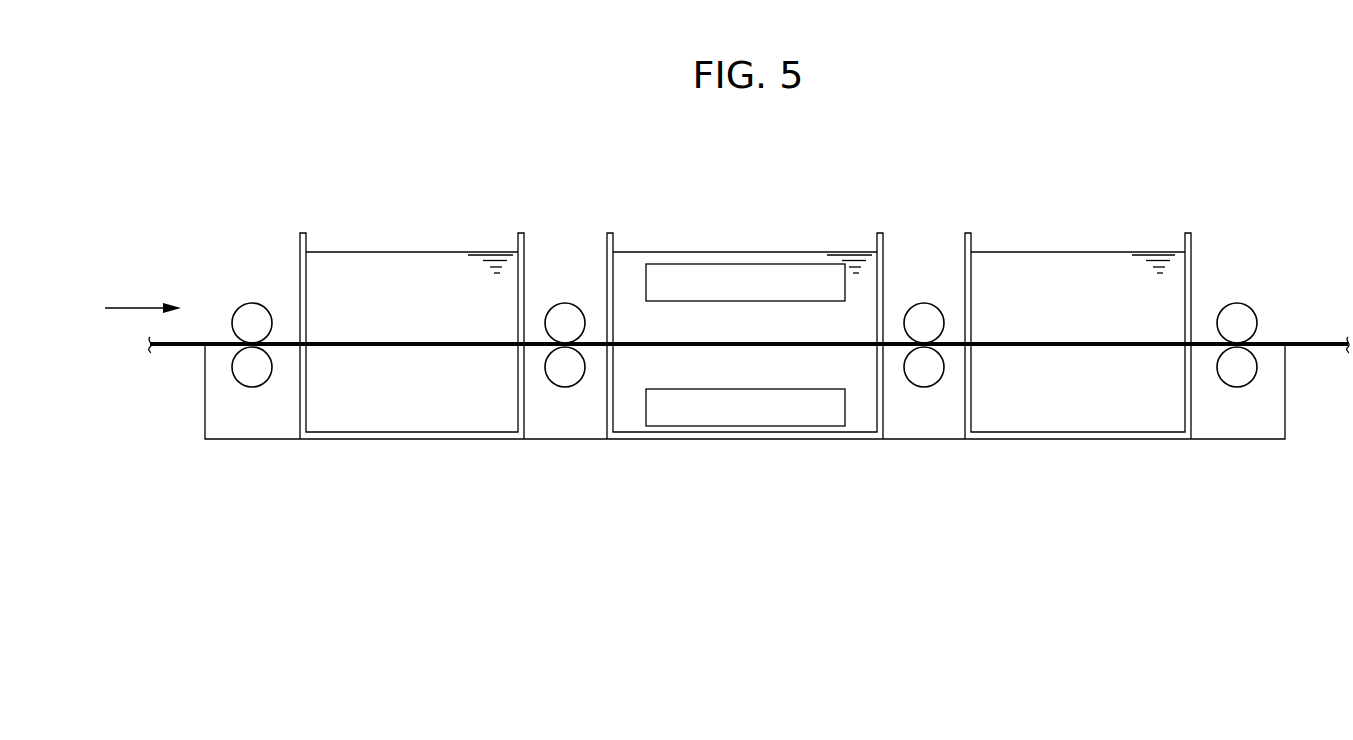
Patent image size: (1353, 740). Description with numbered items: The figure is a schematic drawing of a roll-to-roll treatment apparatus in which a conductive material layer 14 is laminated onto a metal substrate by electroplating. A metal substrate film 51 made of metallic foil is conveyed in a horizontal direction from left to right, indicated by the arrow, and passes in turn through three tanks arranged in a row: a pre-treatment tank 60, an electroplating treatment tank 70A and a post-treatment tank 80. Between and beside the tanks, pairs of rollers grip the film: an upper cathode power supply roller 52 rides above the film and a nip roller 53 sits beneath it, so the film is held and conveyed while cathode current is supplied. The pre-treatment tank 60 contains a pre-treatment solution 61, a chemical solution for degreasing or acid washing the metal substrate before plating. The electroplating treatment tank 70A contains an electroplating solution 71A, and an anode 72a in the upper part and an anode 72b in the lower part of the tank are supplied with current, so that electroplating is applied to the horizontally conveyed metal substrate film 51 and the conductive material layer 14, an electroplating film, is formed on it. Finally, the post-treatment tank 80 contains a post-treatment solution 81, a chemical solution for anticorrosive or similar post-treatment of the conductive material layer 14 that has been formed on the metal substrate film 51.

The conductive material layer 14 is at (1323, 336).
The metal substrate film 51 is at (167, 348).
The cathode power supply roller 52 is at (253, 312).
The nip roller 53 is at (253, 383).
The pre-treatment tank 60 is at (527, 262).
The pre-treatment solution 61 is at (370, 412).
The electroplating treatment tank 70A is at (886, 262).
The electroplating solution 71A is at (629, 410).
The anode 72a is at (808, 276).
The anode 72b is at (808, 412).
The post-treatment tank 80 is at (1194, 262).
The post-treatment solution 81 is at (1028, 412).